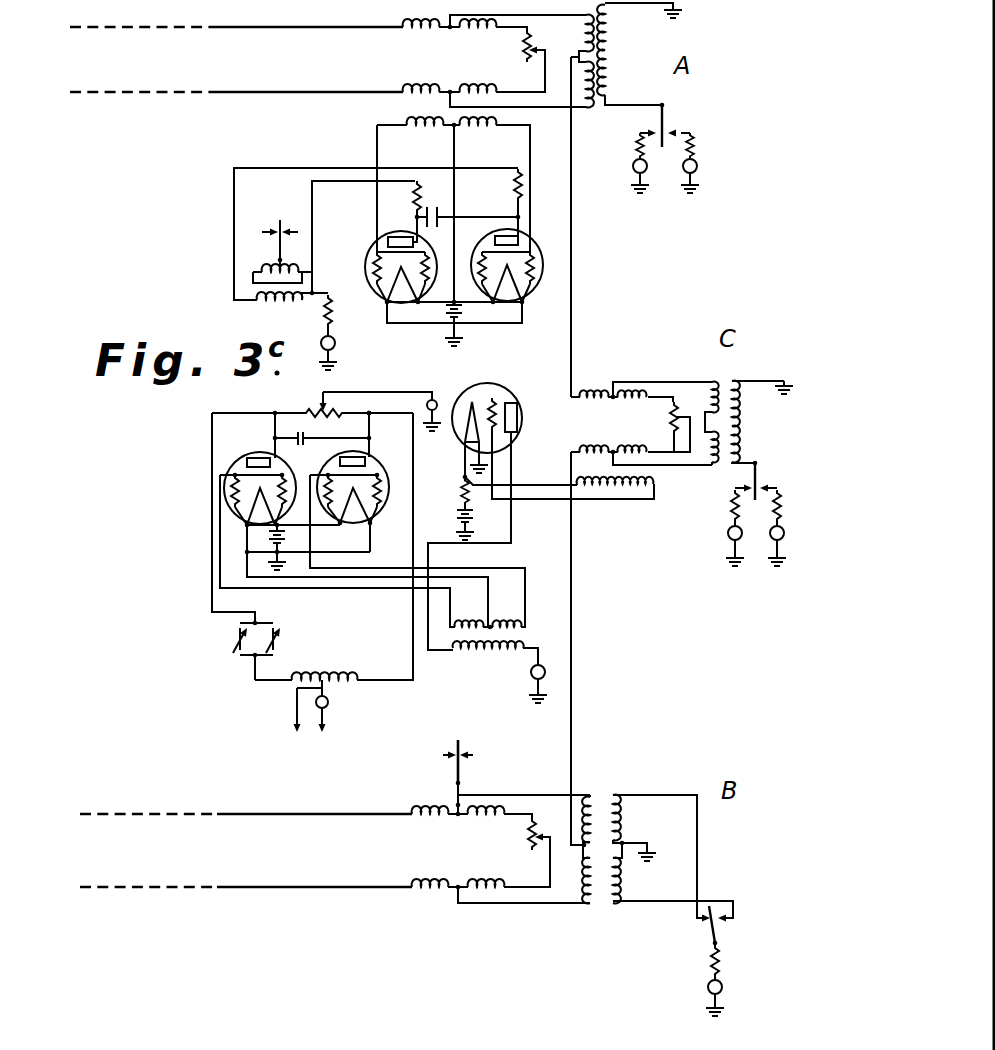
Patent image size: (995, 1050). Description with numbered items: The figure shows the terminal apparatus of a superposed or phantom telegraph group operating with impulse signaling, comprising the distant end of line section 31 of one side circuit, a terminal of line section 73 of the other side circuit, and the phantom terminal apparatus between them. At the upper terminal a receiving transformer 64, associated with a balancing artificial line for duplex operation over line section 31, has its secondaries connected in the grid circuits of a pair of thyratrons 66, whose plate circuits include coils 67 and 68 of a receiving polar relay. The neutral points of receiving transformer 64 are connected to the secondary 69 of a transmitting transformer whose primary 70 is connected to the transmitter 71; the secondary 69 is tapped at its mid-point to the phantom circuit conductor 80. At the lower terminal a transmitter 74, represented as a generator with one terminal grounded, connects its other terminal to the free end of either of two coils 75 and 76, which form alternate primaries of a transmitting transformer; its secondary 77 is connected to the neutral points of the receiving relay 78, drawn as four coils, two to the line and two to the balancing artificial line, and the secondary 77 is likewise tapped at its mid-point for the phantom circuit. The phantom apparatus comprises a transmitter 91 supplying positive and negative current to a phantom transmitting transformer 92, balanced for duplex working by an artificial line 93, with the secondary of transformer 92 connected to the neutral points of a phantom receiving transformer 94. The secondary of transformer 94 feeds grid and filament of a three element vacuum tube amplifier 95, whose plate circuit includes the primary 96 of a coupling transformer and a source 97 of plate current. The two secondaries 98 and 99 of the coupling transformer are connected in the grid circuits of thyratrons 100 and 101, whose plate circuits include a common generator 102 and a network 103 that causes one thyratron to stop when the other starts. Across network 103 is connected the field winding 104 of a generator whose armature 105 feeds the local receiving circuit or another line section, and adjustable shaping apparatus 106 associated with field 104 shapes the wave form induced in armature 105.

The line section 31 is at (277, 36).
The receiving transformer 64 is at (495, 61).
The thyratrons 66 is at (368, 290).
The coil of receiving polar relay 67 is at (271, 268).
The coil of receiving polar relay 68 is at (376, 269).
The secondary of transmitting transformer 69 is at (580, 40).
The primary of transmitting transformer 70 is at (613, 68).
The transmitter 71 is at (665, 148).
The line section 73 is at (280, 822).
The transmitter 74 is at (723, 986).
The coil 75 is at (622, 820).
The coil 76 is at (624, 881).
The secondary of transmitting transformer 77 is at (584, 865).
The receiving relay 78 is at (501, 821).
The phantom circuit conductor 80 is at (573, 290).
The transmitter 91 is at (756, 513).
The phantom transmitting transformer 92 is at (749, 411).
The artificial line 93 is at (672, 427).
The phantom receiving transformer 94 is at (592, 446).
The three element thermionic vacuum tube amplifier 95 is at (517, 435).
The primary of coupling transformer 96 is at (495, 653).
The source of plate current 97 is at (533, 684).
The secondary of coupling transformer 98 is at (356, 551).
The secondary of coupling transformer 99 is at (417, 551).
The thyratron 100 is at (232, 517).
The thyratron 101 is at (379, 518).
The common generator 102 is at (446, 386).
The network 103 is at (322, 415).
The field winding 104 is at (340, 675).
The armature 105 is at (332, 706).
The adjustable shaping apparatus 106 is at (267, 546).